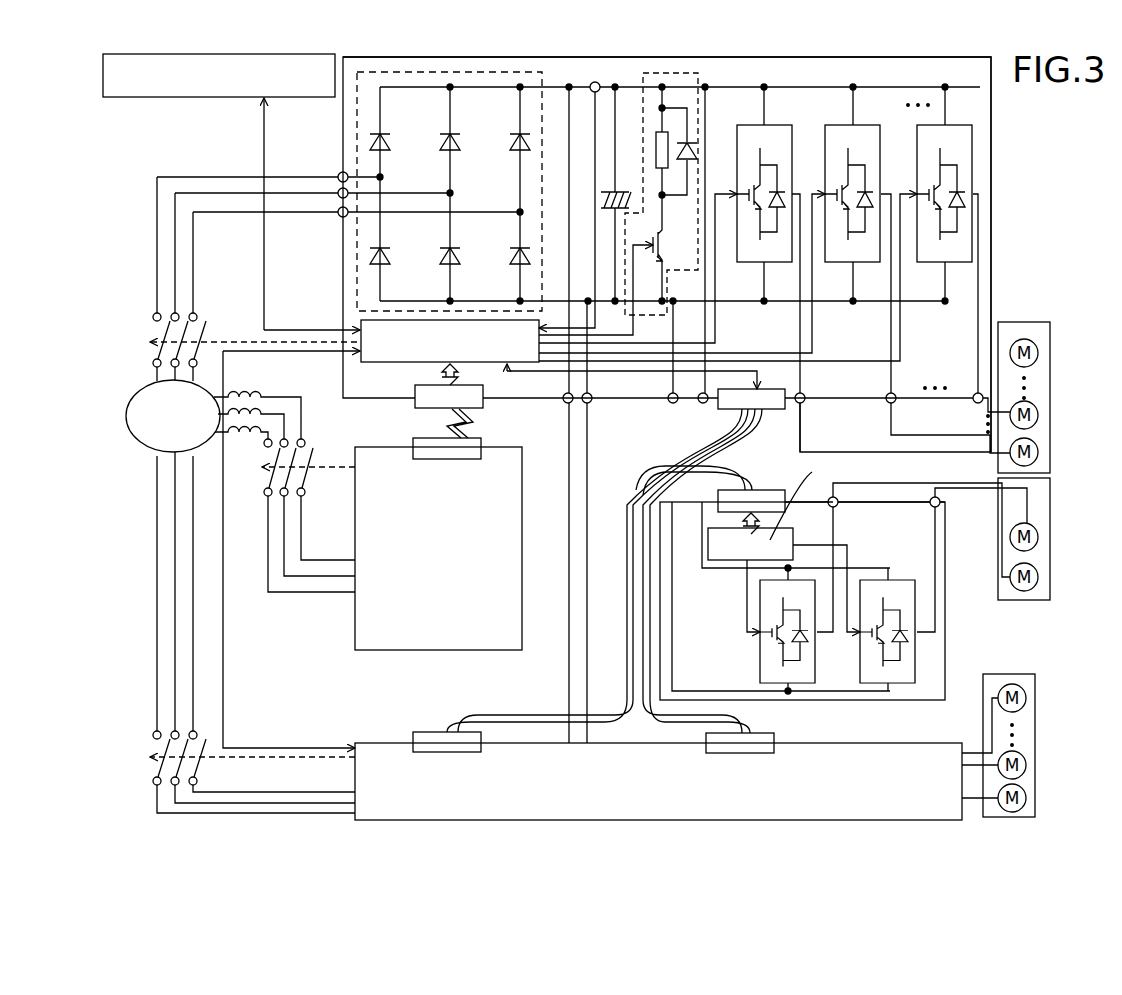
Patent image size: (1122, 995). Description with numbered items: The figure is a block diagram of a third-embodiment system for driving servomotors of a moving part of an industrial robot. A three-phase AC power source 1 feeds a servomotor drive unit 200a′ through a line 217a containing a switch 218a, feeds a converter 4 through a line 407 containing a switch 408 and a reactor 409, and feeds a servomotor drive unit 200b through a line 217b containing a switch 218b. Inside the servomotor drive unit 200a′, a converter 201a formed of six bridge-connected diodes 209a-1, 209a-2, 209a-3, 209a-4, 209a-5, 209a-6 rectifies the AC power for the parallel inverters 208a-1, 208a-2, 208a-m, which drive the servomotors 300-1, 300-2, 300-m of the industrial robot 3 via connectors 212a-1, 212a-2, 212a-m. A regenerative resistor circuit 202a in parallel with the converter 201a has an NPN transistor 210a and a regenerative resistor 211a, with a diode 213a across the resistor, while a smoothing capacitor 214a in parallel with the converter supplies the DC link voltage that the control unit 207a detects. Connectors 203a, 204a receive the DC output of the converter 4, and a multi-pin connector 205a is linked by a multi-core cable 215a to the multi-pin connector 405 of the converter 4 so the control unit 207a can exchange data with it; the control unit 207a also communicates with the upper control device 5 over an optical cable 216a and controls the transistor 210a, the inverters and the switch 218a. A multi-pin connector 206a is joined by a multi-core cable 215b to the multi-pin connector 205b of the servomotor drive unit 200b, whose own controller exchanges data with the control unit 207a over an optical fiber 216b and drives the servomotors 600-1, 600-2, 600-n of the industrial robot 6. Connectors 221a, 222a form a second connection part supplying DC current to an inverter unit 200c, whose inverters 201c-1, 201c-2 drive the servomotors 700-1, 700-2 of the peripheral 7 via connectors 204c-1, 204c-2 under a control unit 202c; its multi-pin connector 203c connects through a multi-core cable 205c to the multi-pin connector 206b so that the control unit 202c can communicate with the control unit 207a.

The three-phase AC power source 1 is at (135, 436).
The industrial robot 3 is at (997, 361).
The converter 4 is at (352, 628).
The upper control device 5 is at (205, 99).
The industrial robot 6 is at (993, 736).
The peripheral 7 is at (1011, 548).
The servomotor drive unit 200a′ is at (995, 139).
The servomotor drive unit 200b is at (353, 743).
The inverter unit 200c is at (946, 655).
The converter 201a is at (635, 191).
The inverter 201c-1 is at (898, 580).
The inverter 201c-2 is at (760, 660).
The regenerative resistor circuit 202a is at (801, 214).
The control unit 202c is at (720, 561).
The connector 203a is at (562, 402).
The multi-pin connector 203c is at (717, 507).
The connector 204a is at (592, 402).
The connector 204c-1 is at (940, 506).
The connector 204c-2 is at (840, 500).
The multi-pin connector 205a is at (413, 398).
The multi-pin connector 205b is at (410, 730).
The multi-core cable 205c is at (677, 723).
The multi-pin connector 206a is at (760, 411).
The multi-pin connector 206b is at (778, 740).
The control unit 207a is at (415, 363).
The inverter 208a-1 is at (788, 135).
The inverter 208a-2 is at (865, 125).
The inverter 208a-m is at (975, 150).
The diode 209a-1 is at (418, 120).
The diode 209a-2 is at (418, 238).
The diode 209a-3 is at (488, 120).
The diode 209a-4 is at (488, 238).
The diode 209a-5 is at (512, 155).
The diode 209a-6 is at (512, 268).
The NPN transistor 210a is at (668, 238).
The regenerative resistor 211a is at (668, 142).
The connector 212a-1 is at (803, 406).
The connector 212a-2 is at (886, 394).
The connector 212a-m is at (973, 394).
The diode 213a is at (693, 148).
The smoothing capacitor 214a is at (618, 186).
The multi-core cable 215a is at (440, 418).
The multi-core cable 215b is at (628, 580).
The optical cable 216a is at (264, 262).
The optical fiber 216b is at (224, 705).
The line 217a is at (148, 195).
The line 217b is at (148, 806).
The switch 218a is at (148, 362).
The switch 218b is at (145, 740).
The connector 221a is at (668, 397).
The connector 222a is at (698, 405).
The servomotor 300-1 is at (1010, 455).
The servomotor 300-2 is at (1038, 400).
The servomotor 300-m is at (1020, 340).
The multi-pin connector 405 is at (484, 446).
The line 407 is at (268, 597).
The switch 408 is at (262, 490).
The reactor 409 is at (265, 392).
The servomotor 600-1 is at (1025, 790).
The servomotor 600-2 is at (990, 758).
The servomotor 600-n is at (1052, 676).
The servomotor 700-1 is at (1010, 545).
The servomotor 700-2 is at (1035, 586).